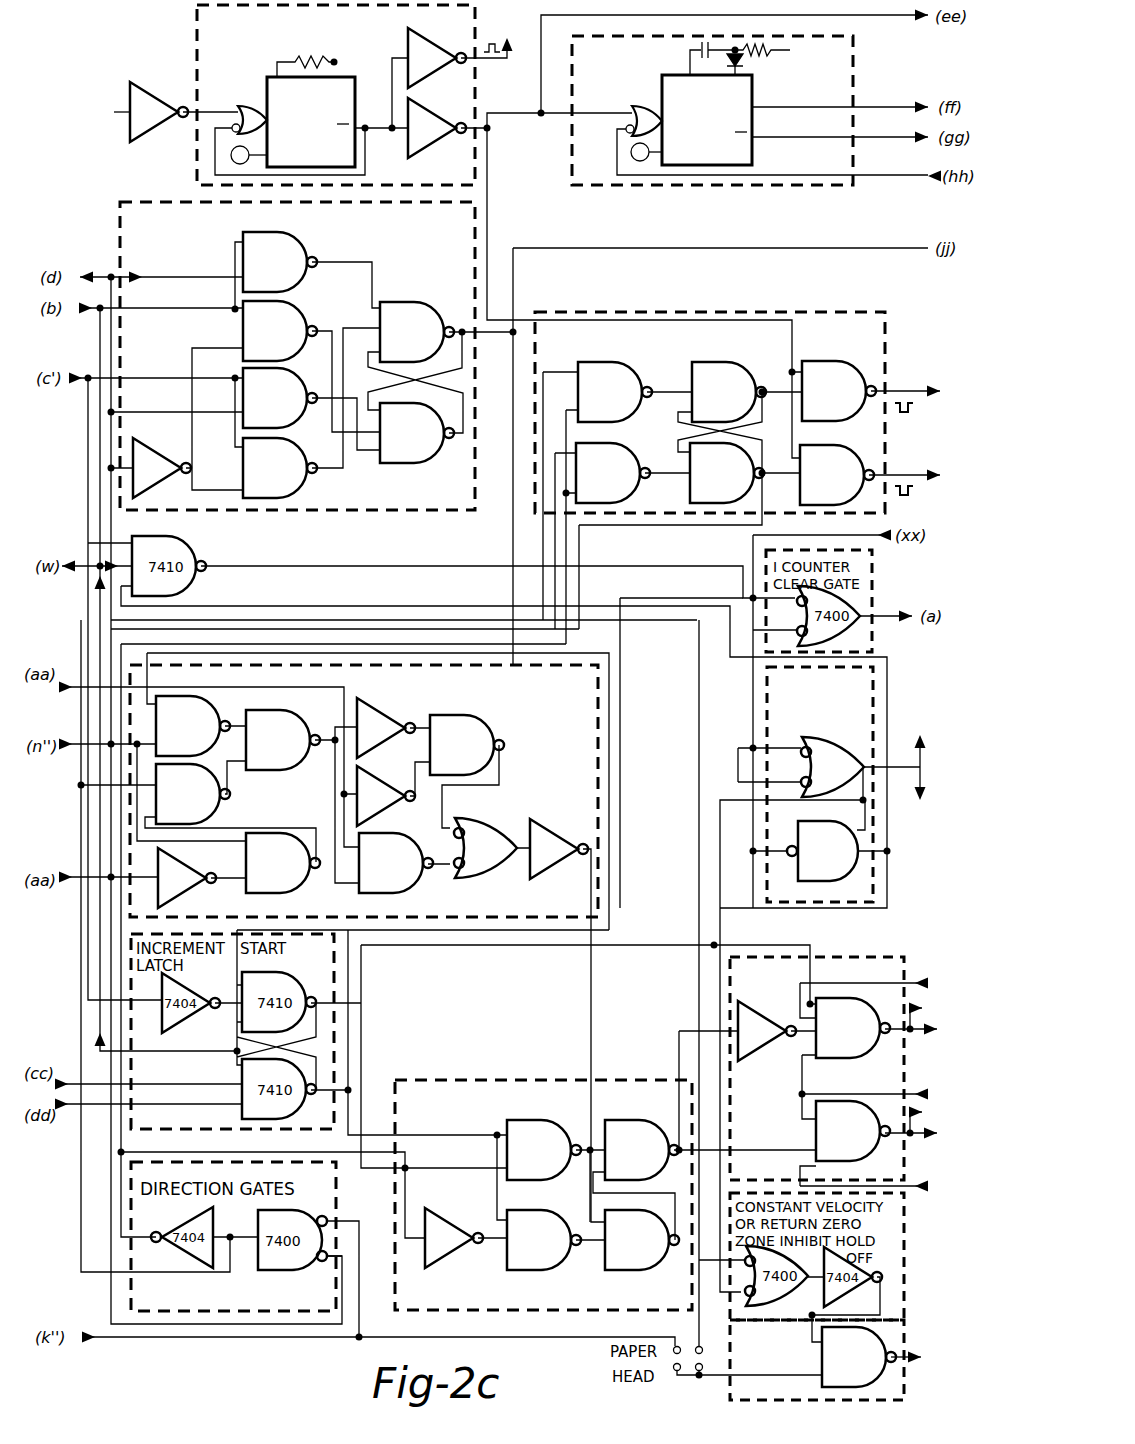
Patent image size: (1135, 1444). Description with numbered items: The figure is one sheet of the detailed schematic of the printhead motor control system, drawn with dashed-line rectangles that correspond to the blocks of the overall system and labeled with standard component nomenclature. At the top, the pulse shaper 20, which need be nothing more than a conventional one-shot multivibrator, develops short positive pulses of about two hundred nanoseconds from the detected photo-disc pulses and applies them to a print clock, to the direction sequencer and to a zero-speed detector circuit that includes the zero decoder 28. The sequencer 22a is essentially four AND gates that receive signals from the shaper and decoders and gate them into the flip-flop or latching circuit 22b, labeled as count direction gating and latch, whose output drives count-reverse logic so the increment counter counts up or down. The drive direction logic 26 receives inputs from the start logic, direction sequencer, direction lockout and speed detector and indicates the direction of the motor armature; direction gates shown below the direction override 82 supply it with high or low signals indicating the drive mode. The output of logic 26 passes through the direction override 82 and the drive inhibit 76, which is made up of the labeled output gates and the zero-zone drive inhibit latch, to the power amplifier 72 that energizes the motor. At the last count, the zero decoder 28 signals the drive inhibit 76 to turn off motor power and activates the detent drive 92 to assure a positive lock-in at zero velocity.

The pulse shaper 20 is at (197, 85).
The direction sequencer 22a is at (120, 223).
The latching circuit 22b is at (757, 312).
The drive direction logic 26 is at (598, 746).
The zero decoder 28 is at (572, 185).
The power amplifier 72 is at (732, 1006).
The drive inhibit 76 is at (767, 731).
The direction override 82 is at (546, 1080).
The detent drive 92 is at (902, 1342).